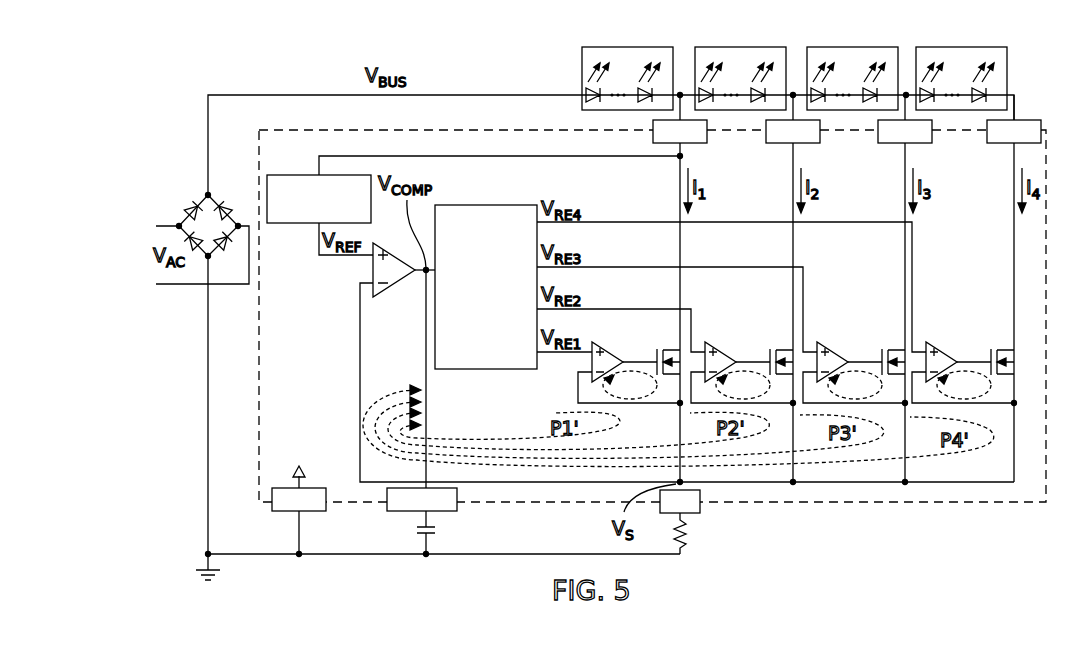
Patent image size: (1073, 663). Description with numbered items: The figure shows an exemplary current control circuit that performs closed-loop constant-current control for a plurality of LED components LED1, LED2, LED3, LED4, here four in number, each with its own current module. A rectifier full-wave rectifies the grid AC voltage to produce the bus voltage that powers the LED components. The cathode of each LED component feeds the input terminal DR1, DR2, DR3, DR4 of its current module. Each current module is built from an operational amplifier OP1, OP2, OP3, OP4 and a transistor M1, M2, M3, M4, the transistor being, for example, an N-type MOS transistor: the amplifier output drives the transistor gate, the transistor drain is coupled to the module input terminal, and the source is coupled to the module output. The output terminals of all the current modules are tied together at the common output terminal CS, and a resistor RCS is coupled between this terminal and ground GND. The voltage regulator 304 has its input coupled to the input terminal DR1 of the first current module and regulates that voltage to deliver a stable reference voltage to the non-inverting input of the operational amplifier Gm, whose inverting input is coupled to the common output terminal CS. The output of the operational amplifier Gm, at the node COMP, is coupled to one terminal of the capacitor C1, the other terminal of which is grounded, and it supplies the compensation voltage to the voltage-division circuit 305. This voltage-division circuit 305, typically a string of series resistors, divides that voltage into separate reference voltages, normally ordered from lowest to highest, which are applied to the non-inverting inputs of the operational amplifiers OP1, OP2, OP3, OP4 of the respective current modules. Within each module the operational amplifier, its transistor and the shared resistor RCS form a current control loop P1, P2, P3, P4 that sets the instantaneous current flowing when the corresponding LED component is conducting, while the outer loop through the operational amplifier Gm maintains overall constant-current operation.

The voltage regulator 304 is at (288, 175).
The voltage-division circuit 305 is at (487, 205).
The LED component LED1 is at (583, 47).
The LED component LED2 is at (696, 47).
The LED component LED3 is at (808, 47).
The LED component LED4 is at (917, 47).
The input terminal of the first current module DR1 is at (680, 131).
The input terminal of the second current module DR2 is at (793, 131).
The input terminal of the third current module DR3 is at (905, 131).
The input terminal of the fourth current module DR4 is at (1014, 131).
The operational amplifier OP1 is at (601, 351).
The operational amplifier OP2 is at (714, 351).
The operational amplifier OP3 is at (826, 351).
The operational amplifier OP4 is at (935, 351).
The transistor M1 is at (658, 346).
The transistor M2 is at (771, 346).
The transistor M3 is at (883, 346).
The transistor M4 is at (992, 346).
The current control loop P1 is at (630, 385).
The current control loop P2 is at (743, 385).
The current control loop P3 is at (855, 385).
The current control loop P4 is at (964, 385).
The operational amplifier Gm is at (373, 270).
The output terminal of the operational amplifier Gm COMP is at (422, 499).
The capacitor C1 is at (436, 532).
The ground GND is at (299, 499).
The common output terminal CS is at (680, 501).
The resistor RCS is at (687, 534).